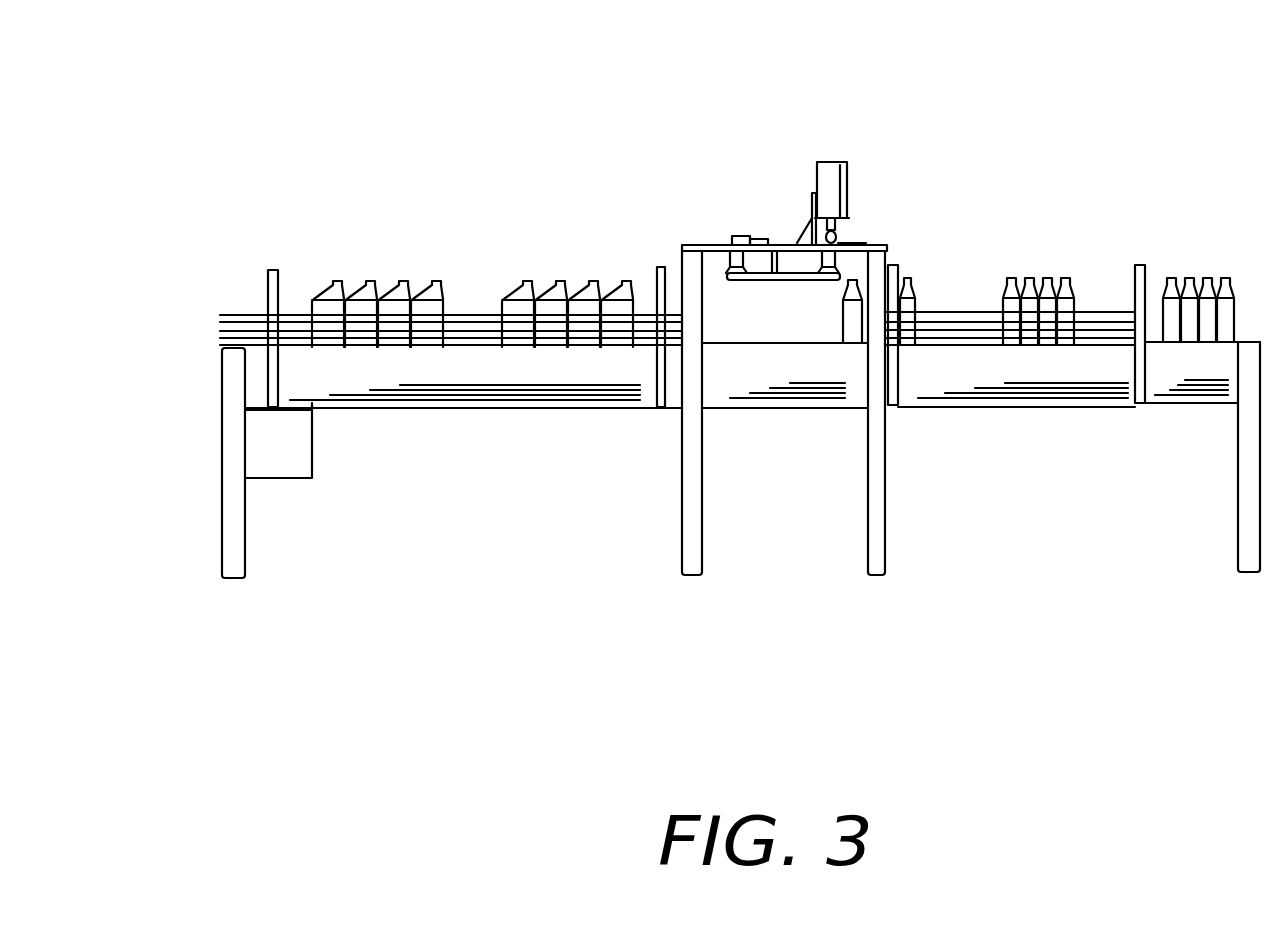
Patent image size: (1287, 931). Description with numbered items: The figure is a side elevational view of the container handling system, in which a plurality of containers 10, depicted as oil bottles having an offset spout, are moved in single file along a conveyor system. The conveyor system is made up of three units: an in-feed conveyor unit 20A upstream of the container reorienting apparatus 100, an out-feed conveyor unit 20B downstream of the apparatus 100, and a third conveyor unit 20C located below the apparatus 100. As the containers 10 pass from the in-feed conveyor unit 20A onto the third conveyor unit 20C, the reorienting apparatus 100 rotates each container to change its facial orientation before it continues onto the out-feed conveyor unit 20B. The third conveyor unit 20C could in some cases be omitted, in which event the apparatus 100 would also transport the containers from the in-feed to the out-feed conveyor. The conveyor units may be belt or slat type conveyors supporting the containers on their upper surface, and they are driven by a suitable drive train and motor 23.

The container 10 is at (433, 293).
The container reorienting apparatus 100 is at (837, 147).
The in-feed conveyor unit 20A is at (465, 375).
The out-feed conveyor unit 20B is at (1035, 370).
The third conveyor unit 20C is at (782, 372).
The drive train and motor 23 is at (265, 445).